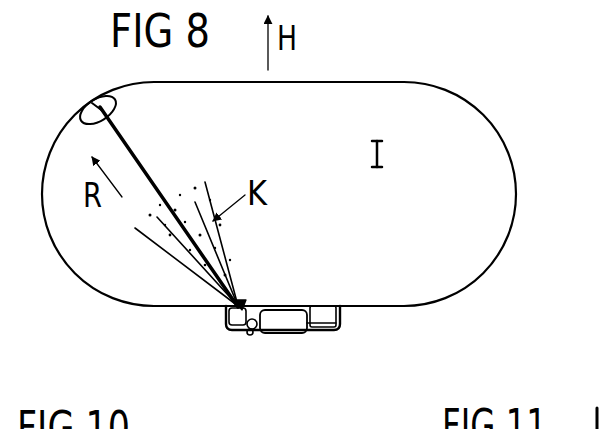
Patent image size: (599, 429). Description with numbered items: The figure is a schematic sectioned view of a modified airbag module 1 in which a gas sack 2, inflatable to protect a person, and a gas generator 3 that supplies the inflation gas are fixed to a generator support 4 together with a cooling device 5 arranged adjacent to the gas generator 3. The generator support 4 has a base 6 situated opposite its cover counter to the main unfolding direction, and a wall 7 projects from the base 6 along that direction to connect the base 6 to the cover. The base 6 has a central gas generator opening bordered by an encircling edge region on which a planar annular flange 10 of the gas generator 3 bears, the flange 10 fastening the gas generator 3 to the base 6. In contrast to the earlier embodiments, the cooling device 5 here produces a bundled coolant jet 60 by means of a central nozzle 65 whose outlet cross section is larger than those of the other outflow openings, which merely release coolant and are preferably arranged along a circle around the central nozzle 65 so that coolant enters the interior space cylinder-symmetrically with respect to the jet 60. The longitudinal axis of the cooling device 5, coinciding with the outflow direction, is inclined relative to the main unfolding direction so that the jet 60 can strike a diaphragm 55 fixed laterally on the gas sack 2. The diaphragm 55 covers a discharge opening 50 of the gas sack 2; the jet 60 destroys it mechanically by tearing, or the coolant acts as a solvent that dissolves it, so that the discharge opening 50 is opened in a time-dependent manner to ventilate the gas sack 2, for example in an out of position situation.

The airbag module 1 is at (482, 287).
The gas sack 2 is at (352, 82).
The gas generator 3 is at (283, 326).
The generator support 4 is at (340, 318).
The cooling device 5 is at (248, 336).
The base 6 is at (317, 333).
The wall 7 is at (222, 320).
The flange 10 is at (312, 325).
The discharge opening 50 is at (96, 97).
The diaphragm 55 is at (88, 108).
The coolant jet 60 is at (131, 152).
The central nozzle 65 is at (248, 297).